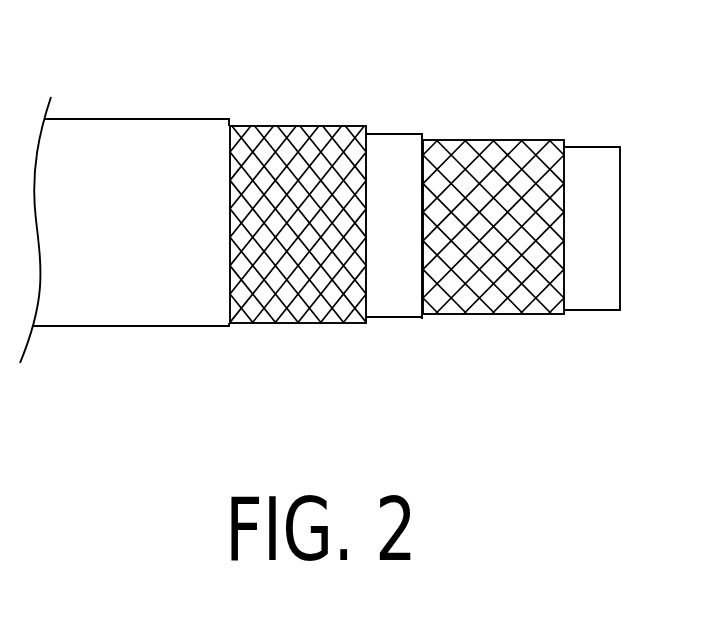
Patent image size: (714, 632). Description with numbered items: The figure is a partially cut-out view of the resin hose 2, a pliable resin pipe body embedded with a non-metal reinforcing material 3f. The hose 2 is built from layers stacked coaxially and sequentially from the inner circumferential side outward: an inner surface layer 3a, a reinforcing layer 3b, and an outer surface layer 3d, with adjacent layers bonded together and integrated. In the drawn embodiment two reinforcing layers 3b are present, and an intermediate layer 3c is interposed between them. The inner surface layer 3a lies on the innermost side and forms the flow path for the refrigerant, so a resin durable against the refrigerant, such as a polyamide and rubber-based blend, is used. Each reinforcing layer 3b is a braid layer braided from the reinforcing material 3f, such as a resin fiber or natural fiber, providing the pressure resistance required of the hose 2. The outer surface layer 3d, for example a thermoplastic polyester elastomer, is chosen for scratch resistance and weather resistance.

The resin hose 2 is at (163, 118).
The inner surface layer 3a is at (585, 310).
The reinforcing layer 3b is at (296, 323).
The intermediate layer 3c is at (386, 317).
The outer surface layer 3d is at (113, 326).
The reinforcing material 3f is at (256, 143).